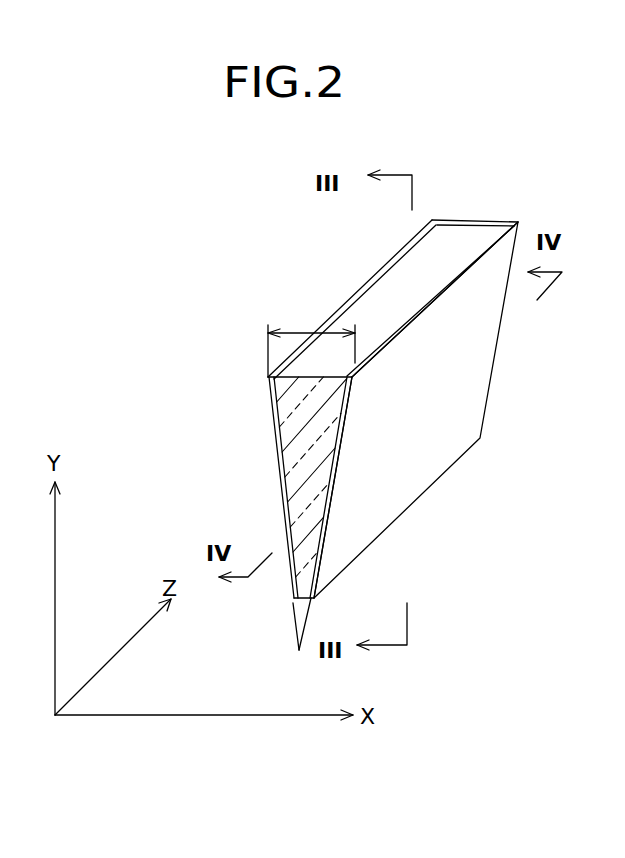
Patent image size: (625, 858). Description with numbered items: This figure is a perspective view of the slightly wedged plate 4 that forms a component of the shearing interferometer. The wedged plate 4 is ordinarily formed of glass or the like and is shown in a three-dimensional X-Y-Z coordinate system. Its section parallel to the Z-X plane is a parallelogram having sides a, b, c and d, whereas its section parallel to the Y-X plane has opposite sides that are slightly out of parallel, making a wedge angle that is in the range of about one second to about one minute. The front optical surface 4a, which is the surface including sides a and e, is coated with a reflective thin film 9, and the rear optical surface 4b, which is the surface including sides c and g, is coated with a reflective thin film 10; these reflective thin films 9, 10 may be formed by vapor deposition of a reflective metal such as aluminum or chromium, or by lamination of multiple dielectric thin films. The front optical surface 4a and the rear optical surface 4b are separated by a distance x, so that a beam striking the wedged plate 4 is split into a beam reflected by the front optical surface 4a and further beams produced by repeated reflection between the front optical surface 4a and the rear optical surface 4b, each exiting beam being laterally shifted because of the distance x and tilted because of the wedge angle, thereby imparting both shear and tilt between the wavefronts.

The wedged plate 4 is at (362, 390).
The front optical surface 4a is at (394, 487).
The rear optical surface 4b is at (242, 485).
The reflective thin film 9 is at (350, 515).
The reflective thin film 10 is at (285, 520).
The side a is at (442, 289).
The side b is at (478, 222).
The side c is at (385, 272).
The side d is at (307, 380).
The side e is at (338, 470).
The side g is at (246, 487).
The distance x is at (300, 333).